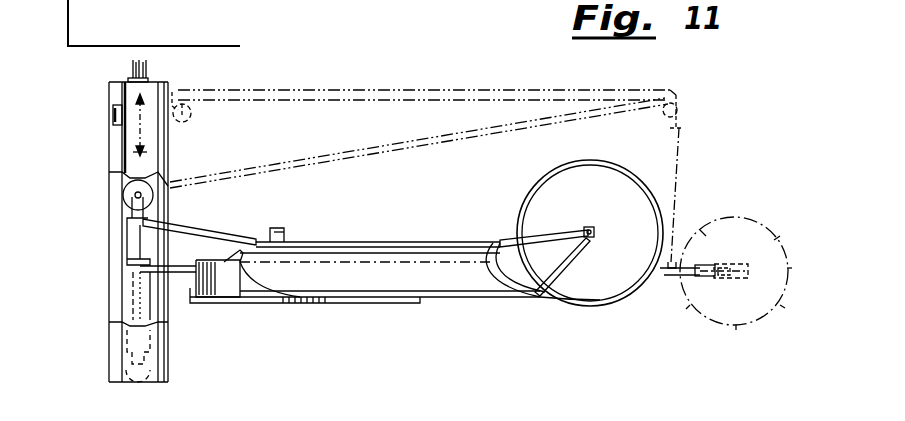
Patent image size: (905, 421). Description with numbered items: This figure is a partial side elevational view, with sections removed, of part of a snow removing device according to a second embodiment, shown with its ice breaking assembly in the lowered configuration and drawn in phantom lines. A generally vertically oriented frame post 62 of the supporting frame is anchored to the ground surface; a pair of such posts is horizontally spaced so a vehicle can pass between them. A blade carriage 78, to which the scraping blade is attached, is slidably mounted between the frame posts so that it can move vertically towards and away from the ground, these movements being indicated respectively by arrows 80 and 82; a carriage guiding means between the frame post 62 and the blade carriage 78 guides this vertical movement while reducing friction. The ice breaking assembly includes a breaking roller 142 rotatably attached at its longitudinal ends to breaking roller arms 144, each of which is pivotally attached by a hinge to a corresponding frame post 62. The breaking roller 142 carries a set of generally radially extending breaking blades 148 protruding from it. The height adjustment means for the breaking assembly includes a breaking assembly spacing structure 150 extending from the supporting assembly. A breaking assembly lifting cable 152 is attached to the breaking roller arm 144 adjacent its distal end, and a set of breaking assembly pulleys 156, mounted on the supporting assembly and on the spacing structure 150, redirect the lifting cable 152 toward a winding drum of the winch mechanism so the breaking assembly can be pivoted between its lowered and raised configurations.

The frame post 62 is at (118, 156).
The blade carriage 78 is at (118, 240).
The arrow 80 is at (389, 303).
The arrow 82 is at (389, 240).
The breaking roller 142 is at (752, 250).
The breaking roller arm 144 is at (668, 278).
The breaking blade 148 is at (764, 226).
The breaking assembly spacing structure 150 is at (434, 128).
The breaking assembly lifting cable 152 is at (683, 133).
The breaking assembly pulley 156 is at (195, 95).